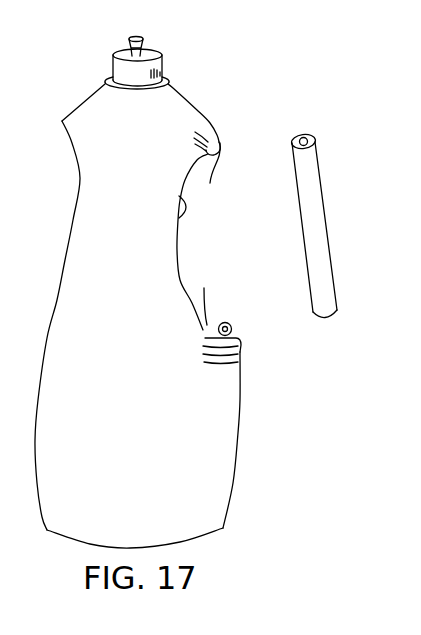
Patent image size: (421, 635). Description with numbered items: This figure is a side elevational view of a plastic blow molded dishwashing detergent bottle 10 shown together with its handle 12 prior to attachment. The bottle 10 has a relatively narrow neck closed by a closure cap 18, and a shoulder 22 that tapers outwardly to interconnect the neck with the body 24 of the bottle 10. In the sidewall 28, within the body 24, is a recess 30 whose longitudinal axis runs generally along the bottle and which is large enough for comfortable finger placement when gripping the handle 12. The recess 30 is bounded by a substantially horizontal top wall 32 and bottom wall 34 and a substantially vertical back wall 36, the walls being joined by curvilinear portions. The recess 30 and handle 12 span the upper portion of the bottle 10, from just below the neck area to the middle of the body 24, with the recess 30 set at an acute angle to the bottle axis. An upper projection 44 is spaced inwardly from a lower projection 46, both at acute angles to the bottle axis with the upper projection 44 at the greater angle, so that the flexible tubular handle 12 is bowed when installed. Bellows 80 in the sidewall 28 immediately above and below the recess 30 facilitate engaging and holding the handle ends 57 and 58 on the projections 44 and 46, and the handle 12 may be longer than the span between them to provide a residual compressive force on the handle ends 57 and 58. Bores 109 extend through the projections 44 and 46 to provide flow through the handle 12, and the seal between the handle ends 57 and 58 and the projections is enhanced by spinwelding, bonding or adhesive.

The bottle 10 is at (82, 82).
The handle 12 is at (325, 216).
The closure cap 18 is at (166, 70).
The shoulder 22 is at (183, 90).
The body 24 is at (154, 444).
The sidewall 28 is at (241, 386).
The recess 30 is at (200, 228).
The top wall 32 is at (210, 183).
The bottom wall 34 is at (204, 290).
The back wall 36 is at (180, 196).
The upper projection 44 is at (212, 150).
The lower projection 46 is at (232, 323).
The handle end 57 is at (306, 136).
The handle end 58 is at (323, 318).
The bellows 80 is at (213, 132).
The bores 109 is at (205, 338).